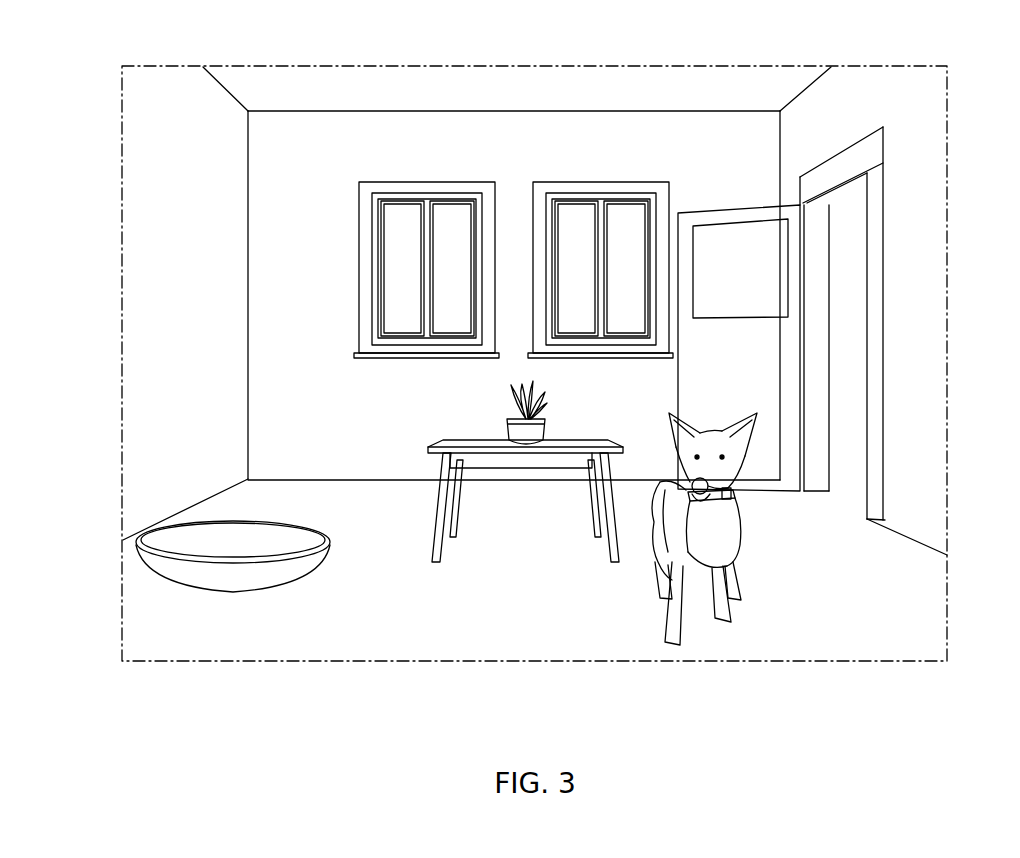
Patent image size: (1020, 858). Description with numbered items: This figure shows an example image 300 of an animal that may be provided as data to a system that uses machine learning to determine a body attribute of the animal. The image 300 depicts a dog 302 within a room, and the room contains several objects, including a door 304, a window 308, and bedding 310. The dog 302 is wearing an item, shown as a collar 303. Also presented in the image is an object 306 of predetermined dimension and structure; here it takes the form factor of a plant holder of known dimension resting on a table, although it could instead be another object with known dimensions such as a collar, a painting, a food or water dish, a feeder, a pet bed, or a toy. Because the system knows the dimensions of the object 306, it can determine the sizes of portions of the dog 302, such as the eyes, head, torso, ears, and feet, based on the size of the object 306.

The image 300 is at (534, 363).
The dog 302 is at (698, 523).
The collar 303 is at (733, 492).
The door 304 is at (763, 345).
The object 306 is at (530, 435).
The window 308 is at (410, 275).
The bedding 310 is at (200, 542).